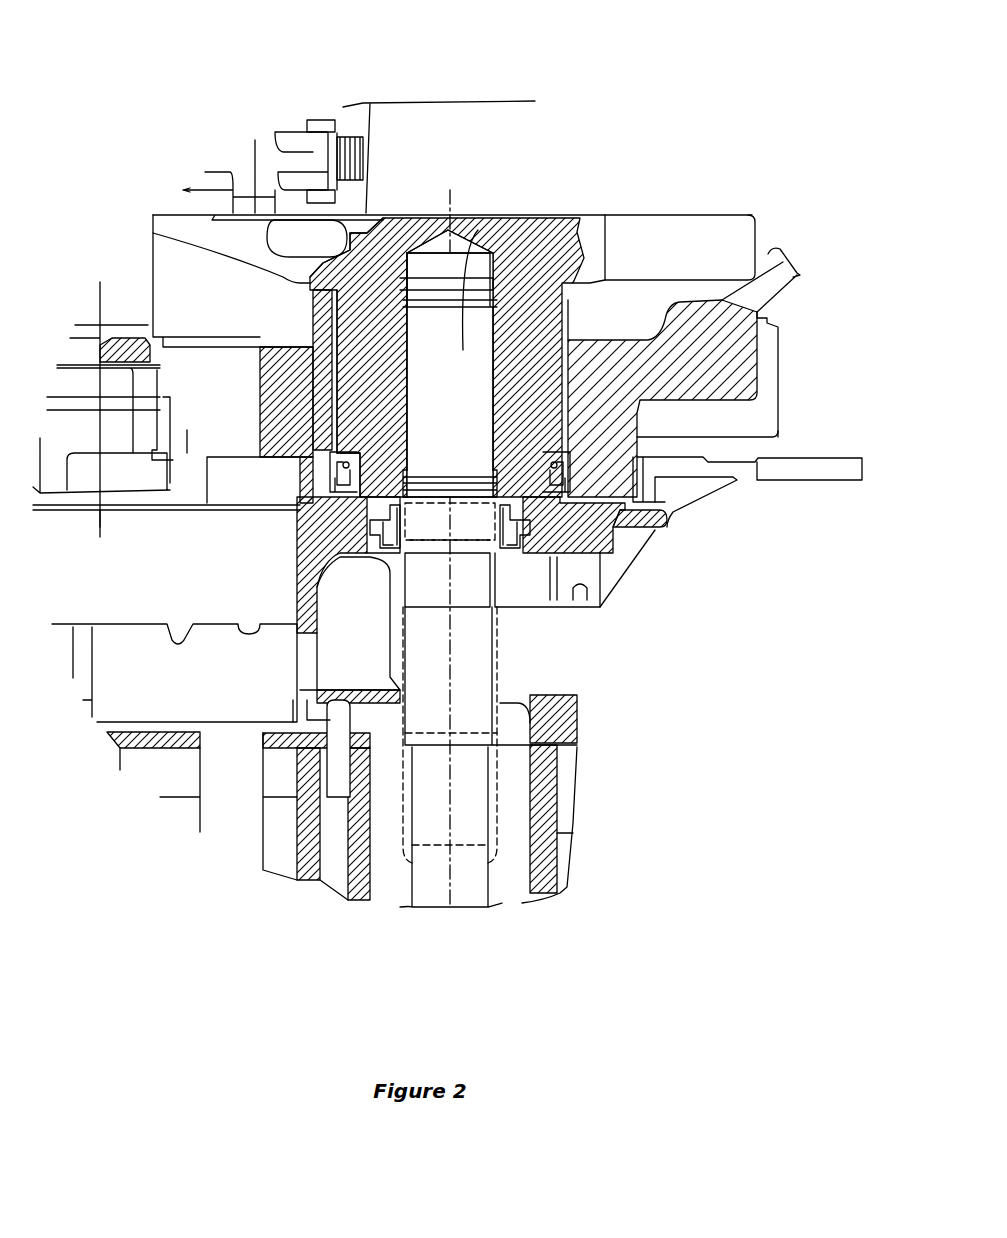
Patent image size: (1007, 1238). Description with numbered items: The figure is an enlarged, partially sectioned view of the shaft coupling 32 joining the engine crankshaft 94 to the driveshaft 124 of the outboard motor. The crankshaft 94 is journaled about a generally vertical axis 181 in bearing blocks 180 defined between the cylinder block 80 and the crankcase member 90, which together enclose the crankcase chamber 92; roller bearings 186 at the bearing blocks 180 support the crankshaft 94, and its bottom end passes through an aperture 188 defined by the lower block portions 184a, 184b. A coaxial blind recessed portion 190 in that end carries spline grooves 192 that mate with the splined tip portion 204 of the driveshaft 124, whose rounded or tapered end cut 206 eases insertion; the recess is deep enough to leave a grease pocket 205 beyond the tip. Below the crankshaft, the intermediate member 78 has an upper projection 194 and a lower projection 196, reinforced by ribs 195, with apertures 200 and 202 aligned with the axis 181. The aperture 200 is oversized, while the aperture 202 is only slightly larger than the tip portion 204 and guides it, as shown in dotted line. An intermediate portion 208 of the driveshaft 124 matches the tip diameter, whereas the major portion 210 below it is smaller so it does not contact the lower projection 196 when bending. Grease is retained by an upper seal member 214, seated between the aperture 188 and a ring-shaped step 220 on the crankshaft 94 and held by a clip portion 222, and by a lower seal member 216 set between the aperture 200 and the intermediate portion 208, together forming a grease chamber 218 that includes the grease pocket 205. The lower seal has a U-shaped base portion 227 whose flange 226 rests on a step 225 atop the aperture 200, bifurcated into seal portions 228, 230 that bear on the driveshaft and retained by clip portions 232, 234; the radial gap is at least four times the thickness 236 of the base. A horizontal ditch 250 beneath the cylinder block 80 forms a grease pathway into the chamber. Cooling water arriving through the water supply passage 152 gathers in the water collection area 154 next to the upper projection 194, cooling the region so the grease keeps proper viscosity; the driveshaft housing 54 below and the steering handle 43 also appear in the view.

The shaft coupling 32 is at (741, 170).
The steering handle 43 is at (813, 465).
The driveshaft housing 54 is at (553, 830).
The intermediate member 78 is at (373, 527).
The cylinder block 80 is at (260, 345).
The crankcase member 90 is at (743, 350).
The crankcase chamber 92 is at (683, 290).
The crankshaft 94 is at (567, 222).
The driveshaft 124 is at (433, 893).
The water supply passage 152 is at (210, 813).
The water collection area 154 is at (130, 595).
The bearing blocks 180 is at (281, 334).
The axis 181 is at (450, 195).
The lower block portion 184a is at (243, 457).
The lower block portion 184b is at (587, 385).
The roller bearings 186 is at (587, 343).
The aperture 188 is at (300, 348).
The recessed portion 190 is at (513, 220).
The spline grooves 192 is at (427, 307).
The upper projection 194 is at (613, 528).
The ribs 195 is at (375, 680).
The lower projection 196 is at (577, 717).
The aperture 200 is at (545, 560).
The aperture 202 is at (492, 702).
The tip portion 204 is at (440, 387).
The grease pocket 205 is at (477, 230).
The end cut 206 is at (388, 222).
The intermediate portion 208 is at (570, 553).
The major portion 210 is at (437, 700).
The upper seal member 214 is at (300, 485).
The lower seal member 216 is at (520, 555).
The grease chamber 218 is at (660, 500).
The step 220 is at (622, 434).
The clip portion 222 is at (557, 470).
The step 225 is at (590, 555).
The flange 226 is at (352, 526).
The base portion 227 is at (300, 630).
The seal portion 228 is at (340, 417).
The seal portion 230 is at (450, 555).
The clip portion 232 is at (400, 497).
The clip portion 234 is at (397, 550).
The thickness 236 is at (318, 598).
The horizontal ditch 250 is at (437, 508).